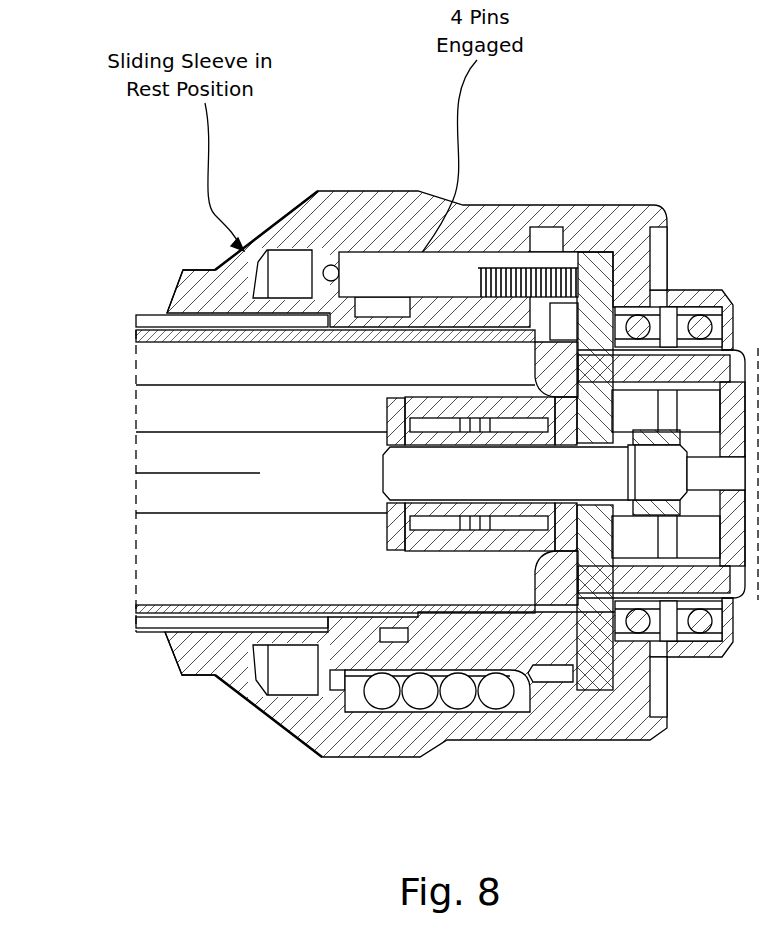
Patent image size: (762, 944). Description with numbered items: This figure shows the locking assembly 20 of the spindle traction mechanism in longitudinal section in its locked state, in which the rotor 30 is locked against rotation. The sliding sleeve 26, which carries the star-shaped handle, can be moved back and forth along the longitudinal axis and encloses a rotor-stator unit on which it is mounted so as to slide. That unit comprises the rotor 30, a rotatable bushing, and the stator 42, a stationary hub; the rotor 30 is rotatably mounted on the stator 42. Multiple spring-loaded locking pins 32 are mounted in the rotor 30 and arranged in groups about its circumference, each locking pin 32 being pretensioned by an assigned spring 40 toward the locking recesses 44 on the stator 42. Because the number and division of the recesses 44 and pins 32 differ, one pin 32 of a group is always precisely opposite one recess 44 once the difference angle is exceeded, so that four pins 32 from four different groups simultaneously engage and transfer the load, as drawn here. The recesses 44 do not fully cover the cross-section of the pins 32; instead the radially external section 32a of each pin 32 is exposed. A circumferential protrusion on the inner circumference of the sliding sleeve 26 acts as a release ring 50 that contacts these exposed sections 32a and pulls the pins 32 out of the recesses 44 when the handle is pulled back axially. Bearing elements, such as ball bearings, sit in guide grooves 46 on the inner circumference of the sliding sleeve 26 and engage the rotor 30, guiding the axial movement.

The locking assembly 20 is at (308, 103).
The sliding sleeve 26 is at (545, 207).
The spring 40 is at (565, 277).
The locking recess 44 is at (300, 312).
The radially external section 32a is at (330, 262).
The locking pin 32 is at (388, 283).
The stator 42 is at (198, 667).
The release ring 50 is at (323, 678).
The rotor 30 is at (367, 662).
The guide groove 46 is at (520, 703).